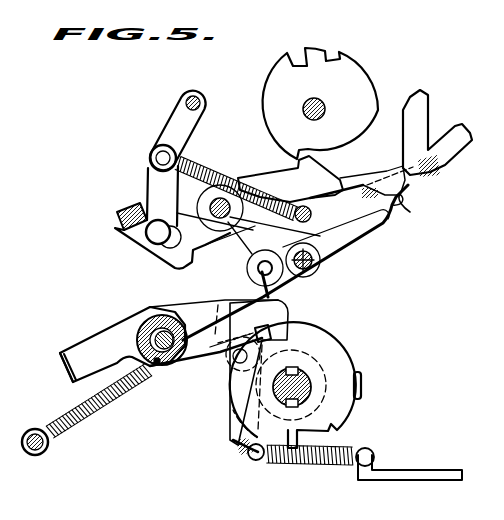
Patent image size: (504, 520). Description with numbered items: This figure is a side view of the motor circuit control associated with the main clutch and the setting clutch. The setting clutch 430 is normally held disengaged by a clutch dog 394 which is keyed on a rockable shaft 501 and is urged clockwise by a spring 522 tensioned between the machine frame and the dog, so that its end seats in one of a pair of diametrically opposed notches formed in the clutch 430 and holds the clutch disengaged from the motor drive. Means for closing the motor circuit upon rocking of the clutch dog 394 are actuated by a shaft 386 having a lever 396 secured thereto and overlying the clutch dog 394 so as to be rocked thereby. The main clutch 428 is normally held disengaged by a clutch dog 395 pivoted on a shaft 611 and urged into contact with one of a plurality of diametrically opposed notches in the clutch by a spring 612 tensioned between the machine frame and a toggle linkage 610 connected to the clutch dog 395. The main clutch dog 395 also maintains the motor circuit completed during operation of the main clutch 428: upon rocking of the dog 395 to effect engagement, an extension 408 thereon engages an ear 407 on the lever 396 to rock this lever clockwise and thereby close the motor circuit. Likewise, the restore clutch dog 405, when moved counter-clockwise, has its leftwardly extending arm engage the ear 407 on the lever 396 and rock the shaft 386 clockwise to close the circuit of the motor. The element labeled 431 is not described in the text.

The main clutch 428 is at (341, 69).
The restore clutch dog 405 is at (432, 170).
The clutch dog 395 is at (268, 178).
The extension 408 is at (410, 183).
The toggle linkage 610 is at (174, 119).
The spring 612 is at (213, 170).
The shaft 611 is at (236, 222).
The shaft 386 is at (313, 280).
The lever 396 is at (332, 252).
The ear 407 is at (410, 215).
The clutch dog 394 is at (92, 340).
The rockable shaft 501 is at (165, 318).
The spring 522 is at (85, 424).
The clutch 430 is at (325, 369).
The shaft 431 is at (311, 387).